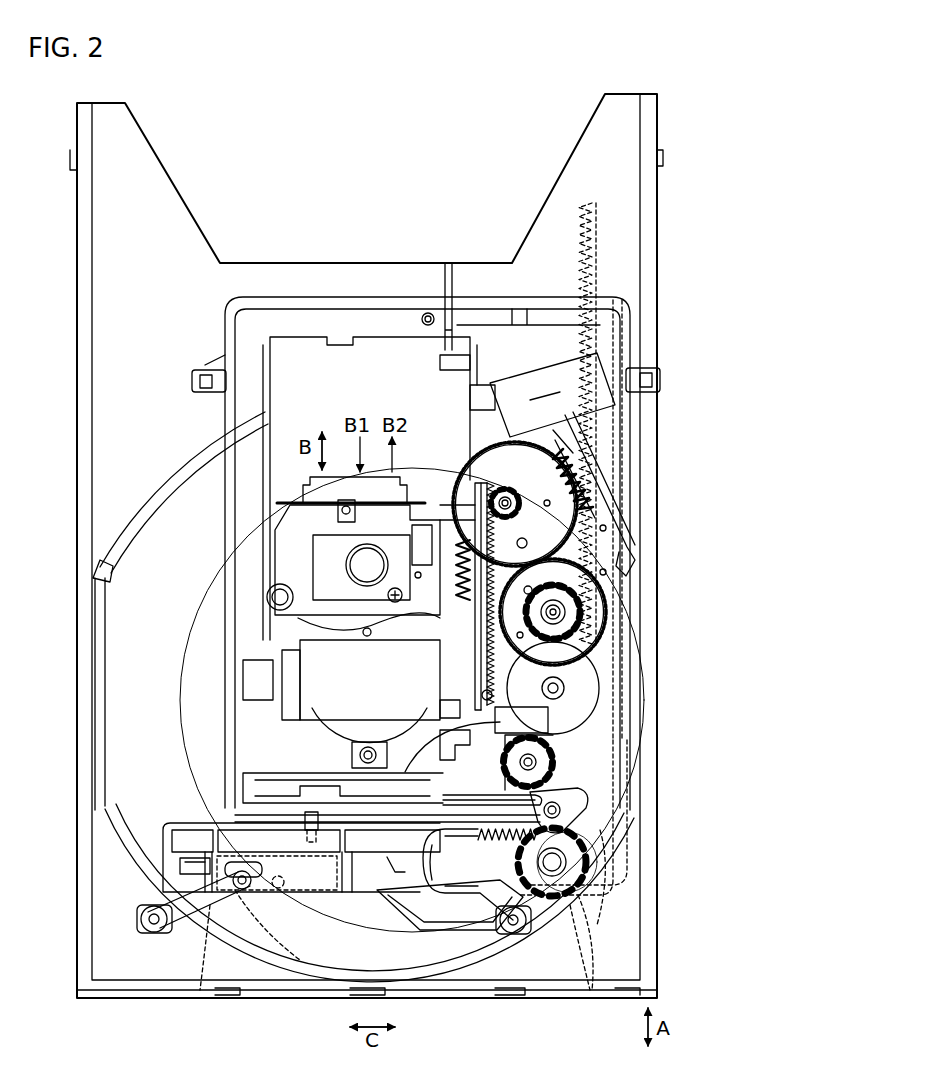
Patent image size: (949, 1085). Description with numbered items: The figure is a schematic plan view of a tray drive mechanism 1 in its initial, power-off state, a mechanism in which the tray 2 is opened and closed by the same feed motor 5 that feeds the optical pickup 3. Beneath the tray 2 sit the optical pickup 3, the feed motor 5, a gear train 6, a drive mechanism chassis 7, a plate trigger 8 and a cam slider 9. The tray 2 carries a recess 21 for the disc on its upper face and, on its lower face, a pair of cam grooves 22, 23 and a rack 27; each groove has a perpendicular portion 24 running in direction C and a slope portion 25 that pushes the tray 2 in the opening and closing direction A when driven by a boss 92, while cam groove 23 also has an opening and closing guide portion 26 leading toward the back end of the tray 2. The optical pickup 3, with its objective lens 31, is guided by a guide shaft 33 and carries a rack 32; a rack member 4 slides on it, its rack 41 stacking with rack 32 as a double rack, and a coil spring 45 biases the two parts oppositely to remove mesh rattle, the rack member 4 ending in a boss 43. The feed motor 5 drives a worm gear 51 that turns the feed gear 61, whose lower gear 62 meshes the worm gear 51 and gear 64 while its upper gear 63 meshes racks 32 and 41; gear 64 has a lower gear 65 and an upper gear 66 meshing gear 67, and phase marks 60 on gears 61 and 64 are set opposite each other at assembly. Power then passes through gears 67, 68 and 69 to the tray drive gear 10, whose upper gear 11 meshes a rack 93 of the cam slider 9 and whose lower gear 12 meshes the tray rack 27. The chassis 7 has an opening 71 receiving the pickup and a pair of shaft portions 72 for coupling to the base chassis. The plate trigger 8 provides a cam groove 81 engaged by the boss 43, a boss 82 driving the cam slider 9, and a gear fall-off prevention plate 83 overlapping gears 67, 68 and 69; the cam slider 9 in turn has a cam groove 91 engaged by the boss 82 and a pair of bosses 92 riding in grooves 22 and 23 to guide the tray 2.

The tray drive mechanism 1 is at (586, 50).
The tray 2 is at (75, 982).
The optical pickup 3 is at (292, 528).
The rack member 4 is at (476, 645).
The feed motor 5 is at (540, 385).
The gear train 6 is at (570, 554).
The drive mechanism chassis 7 is at (228, 470).
The plate trigger 8 is at (360, 740).
The cam slider 9 is at (300, 888).
The tray drive gear 10 is at (600, 898).
The upper gear 11 is at (535, 872).
The lower gear 12 is at (590, 855).
The recess 21 is at (100, 562).
The cam groove 22 is at (250, 895).
The cam groove 23 is at (596, 930).
The perpendicular portion 24 is at (215, 912).
The slope portion 25 is at (235, 905).
The opening and closing guide portion 26 is at (628, 812).
The rack 27 is at (614, 800).
The objective lens 31 is at (360, 565).
The rack 32 is at (508, 665).
The guide shaft 33 is at (440, 364).
The rack 41 is at (506, 490).
The boss 43 is at (462, 708).
The coil spring 45 is at (452, 598).
The worm gear 51 is at (590, 455).
The phase marks 60 is at (606, 528).
The feed gear 61 is at (487, 386).
The lower gear 62 is at (615, 525).
The upper gear 63 is at (527, 541).
The gear 64 is at (580, 590).
The lower gear 65 is at (600, 632).
The upper gear 66 is at (580, 612).
The gear 67 is at (564, 688).
The gear 68 is at (550, 760).
The gear 69 is at (561, 809).
The opening 71 is at (385, 340).
The shaft portions 72 is at (200, 372).
The cam groove 81 is at (475, 735).
The boss 82 is at (290, 882).
The gear fall-off prevention plate 83 is at (548, 718).
The cam groove 91 is at (300, 818).
The bosses 92 is at (153, 933).
The rack 93 is at (482, 850).